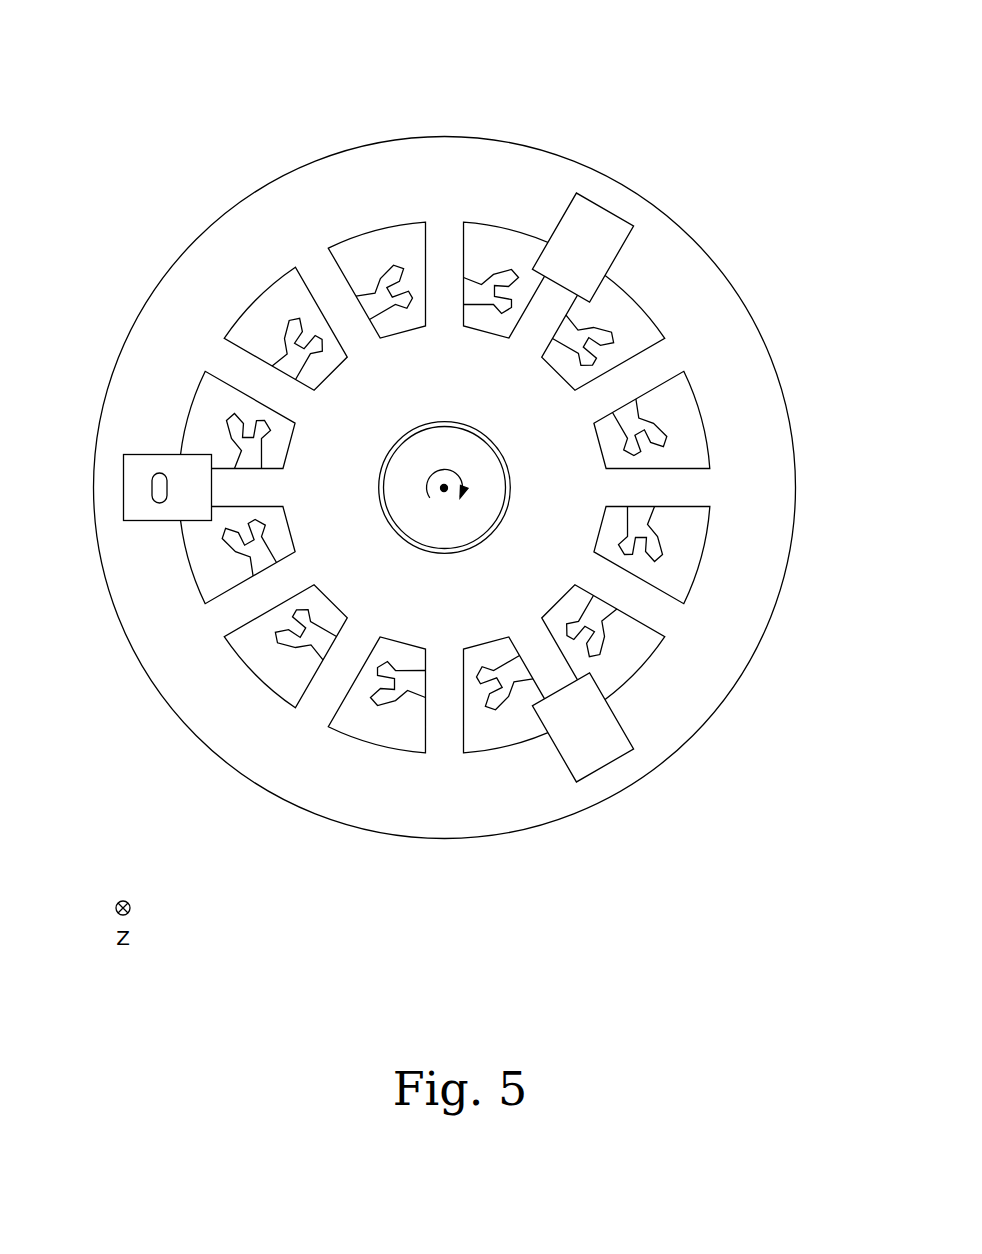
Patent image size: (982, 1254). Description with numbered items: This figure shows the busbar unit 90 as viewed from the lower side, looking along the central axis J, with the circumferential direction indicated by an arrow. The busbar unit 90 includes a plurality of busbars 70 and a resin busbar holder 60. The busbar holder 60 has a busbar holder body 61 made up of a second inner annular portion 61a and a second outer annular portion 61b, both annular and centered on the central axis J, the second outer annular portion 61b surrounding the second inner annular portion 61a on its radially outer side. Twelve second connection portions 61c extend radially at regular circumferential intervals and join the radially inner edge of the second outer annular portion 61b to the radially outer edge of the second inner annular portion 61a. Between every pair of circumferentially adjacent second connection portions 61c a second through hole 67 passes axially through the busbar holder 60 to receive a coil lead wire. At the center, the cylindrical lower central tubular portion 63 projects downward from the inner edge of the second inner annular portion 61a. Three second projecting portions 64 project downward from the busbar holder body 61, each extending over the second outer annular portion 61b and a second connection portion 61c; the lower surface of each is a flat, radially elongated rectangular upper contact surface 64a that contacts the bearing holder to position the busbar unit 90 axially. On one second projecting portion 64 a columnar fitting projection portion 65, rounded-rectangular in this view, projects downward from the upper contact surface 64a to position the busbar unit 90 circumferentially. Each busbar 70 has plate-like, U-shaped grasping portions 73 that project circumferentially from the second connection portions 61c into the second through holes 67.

The busbar unit 90 is at (446, 463).
The busbar holder 60 is at (507, 137).
The busbar holder body 61 is at (425, 77).
The second inner annular portion 61a is at (400, 388).
The second outer annular portion 61b is at (292, 200).
The second connection portion 61c is at (502, 471).
The lower central tubular portion 63 is at (425, 558).
The second projecting portion 64 is at (371, 505).
The upper contact surface 64a is at (153, 518).
The fitting projection portion 65 is at (160, 472).
The second through hole 67 is at (692, 580).
The busbar 70 is at (622, 337).
The grasping portion 73 is at (593, 330).
The central axis J is at (449, 492).